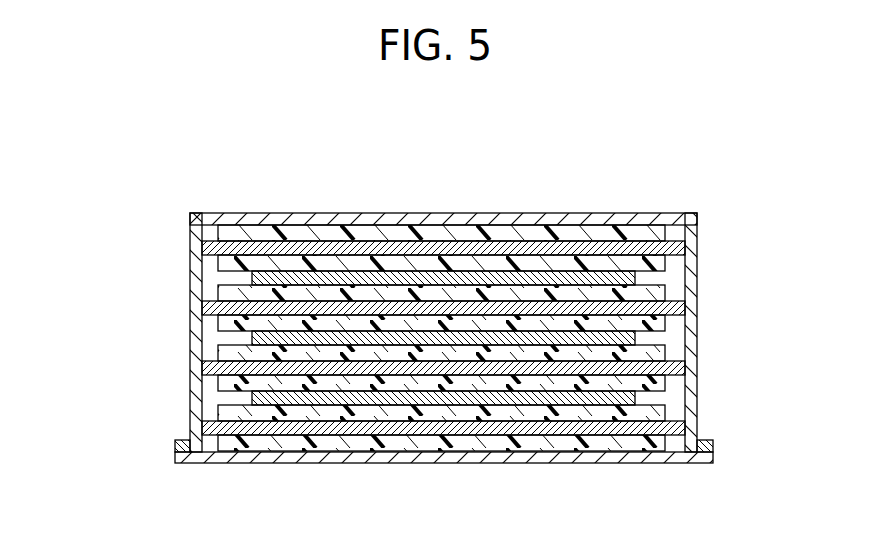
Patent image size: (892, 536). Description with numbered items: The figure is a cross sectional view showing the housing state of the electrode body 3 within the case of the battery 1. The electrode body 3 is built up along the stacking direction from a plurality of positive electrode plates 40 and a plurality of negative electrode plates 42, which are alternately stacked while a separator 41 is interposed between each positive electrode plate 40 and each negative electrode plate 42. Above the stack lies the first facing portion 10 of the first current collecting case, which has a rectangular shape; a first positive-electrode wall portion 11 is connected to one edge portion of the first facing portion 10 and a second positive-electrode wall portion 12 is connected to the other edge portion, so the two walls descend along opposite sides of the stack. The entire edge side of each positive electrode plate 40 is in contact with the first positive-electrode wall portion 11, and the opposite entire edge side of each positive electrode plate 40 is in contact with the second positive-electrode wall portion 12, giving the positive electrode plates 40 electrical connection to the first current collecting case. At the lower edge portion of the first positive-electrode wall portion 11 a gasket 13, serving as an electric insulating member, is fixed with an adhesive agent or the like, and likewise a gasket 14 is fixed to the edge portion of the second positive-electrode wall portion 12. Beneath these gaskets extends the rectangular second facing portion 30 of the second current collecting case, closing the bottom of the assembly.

The piezoelectric device 1 is at (405, 183).
The electrode body 3 is at (488, 208).
The first facing portion 10 is at (600, 217).
The first positive-electrode wall portion 11 is at (196, 355).
The second positive-electrode wall portion 12 is at (688, 338).
The gasket 13 is at (185, 445).
The gasket 14 is at (698, 445).
The second facing portion 30 is at (455, 463).
The positive electrode plate 40 is at (206, 246).
The separator 41 is at (663, 229).
The negative electrode plate 42 is at (256, 278).